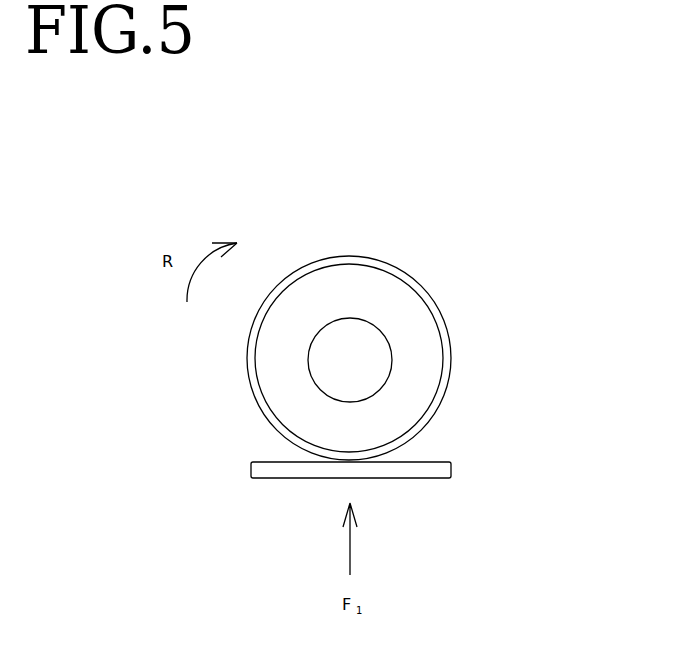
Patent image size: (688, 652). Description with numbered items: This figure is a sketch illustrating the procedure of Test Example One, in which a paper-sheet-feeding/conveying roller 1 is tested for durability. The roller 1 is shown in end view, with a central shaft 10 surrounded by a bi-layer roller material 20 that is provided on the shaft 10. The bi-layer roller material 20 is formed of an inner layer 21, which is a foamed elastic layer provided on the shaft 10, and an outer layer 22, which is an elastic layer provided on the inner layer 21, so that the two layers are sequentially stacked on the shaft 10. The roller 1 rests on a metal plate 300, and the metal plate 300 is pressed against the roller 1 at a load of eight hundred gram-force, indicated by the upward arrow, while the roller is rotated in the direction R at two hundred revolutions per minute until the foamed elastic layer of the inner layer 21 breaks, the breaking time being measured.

The paper-sheet-feeding/conveying roller 1 is at (468, 240).
The shaft 10 is at (380, 330).
The bi-layer roller material 20 is at (542, 368).
The inner layer 21 is at (424, 366).
The outer layer 22 is at (435, 410).
The metal plate 300 is at (251, 467).